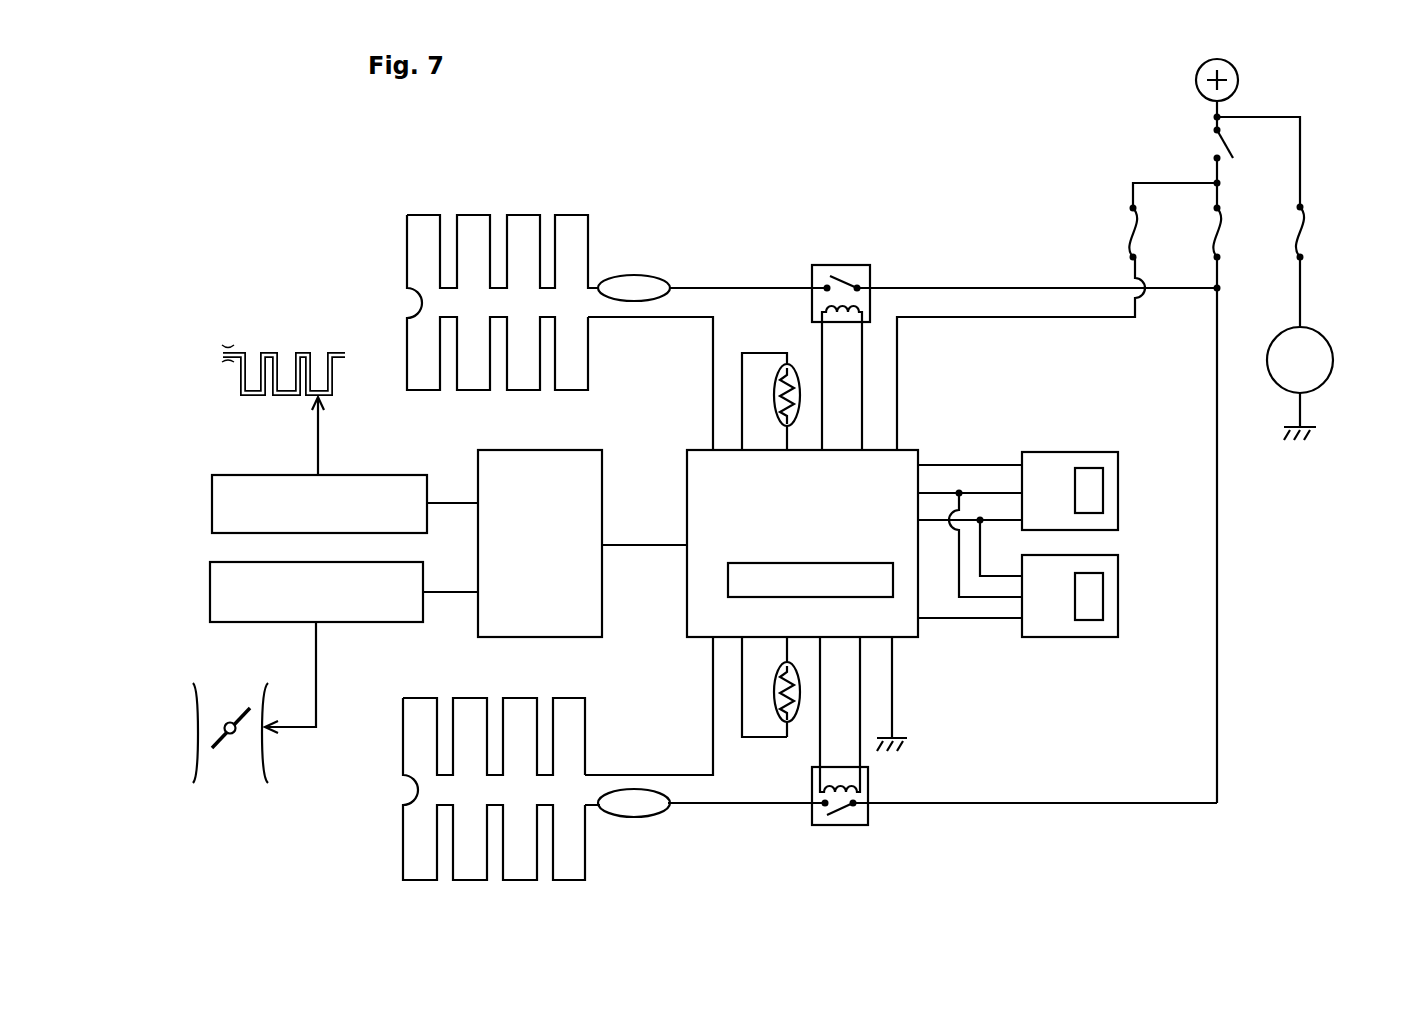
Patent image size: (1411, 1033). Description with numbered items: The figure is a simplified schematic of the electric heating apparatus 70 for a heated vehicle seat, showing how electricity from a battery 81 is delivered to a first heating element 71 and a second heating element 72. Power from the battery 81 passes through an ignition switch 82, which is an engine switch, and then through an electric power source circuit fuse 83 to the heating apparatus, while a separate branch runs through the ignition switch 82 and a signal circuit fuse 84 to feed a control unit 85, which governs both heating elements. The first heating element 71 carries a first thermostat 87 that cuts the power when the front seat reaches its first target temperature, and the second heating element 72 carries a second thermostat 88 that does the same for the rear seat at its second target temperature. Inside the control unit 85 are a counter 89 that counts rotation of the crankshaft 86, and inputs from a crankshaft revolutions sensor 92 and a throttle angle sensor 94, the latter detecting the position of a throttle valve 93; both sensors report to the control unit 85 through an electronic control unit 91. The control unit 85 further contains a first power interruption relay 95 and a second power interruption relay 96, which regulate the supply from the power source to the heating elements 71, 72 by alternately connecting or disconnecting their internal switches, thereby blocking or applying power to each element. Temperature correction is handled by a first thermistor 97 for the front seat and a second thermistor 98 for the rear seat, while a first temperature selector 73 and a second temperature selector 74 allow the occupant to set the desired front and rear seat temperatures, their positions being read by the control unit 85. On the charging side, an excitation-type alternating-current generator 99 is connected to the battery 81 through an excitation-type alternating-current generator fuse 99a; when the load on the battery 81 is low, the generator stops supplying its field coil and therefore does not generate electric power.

The electric heating apparatus 70 is at (338, 190).
The first heating element 71 is at (520, 215).
The second heating element 72 is at (585, 697).
The first temperature selector 73 is at (1092, 452).
The second temperature selector 74 is at (1115, 555).
The battery 81 is at (1240, 68).
The ignition switch 82 is at (1210, 148).
The electric power source circuit fuse 83 is at (1228, 225).
The signal circuit fuse 84 is at (1126, 244).
The control unit 85 is at (912, 446).
The crankshaft 86 is at (263, 350).
The first thermostat 87 is at (640, 276).
The second thermostat 88 is at (637, 790).
The counter 89 is at (893, 583).
The electronic control unit (ECU) 91 is at (590, 450).
The crankshaft revolutions sensor 92 is at (325, 475).
The throttle valve 93 is at (222, 748).
The throttle angle sensor 94 is at (375, 622).
The first power interruption relay 95 is at (835, 265).
The second power interruption relay 96 is at (812, 815).
The first thermistor 97 is at (785, 365).
The second thermistor 98 is at (800, 690).
The excitation-type alternating-current generator (ACG) 99 is at (1325, 330).
The excitation-type alternating-current generator fuse 99a is at (1305, 237).